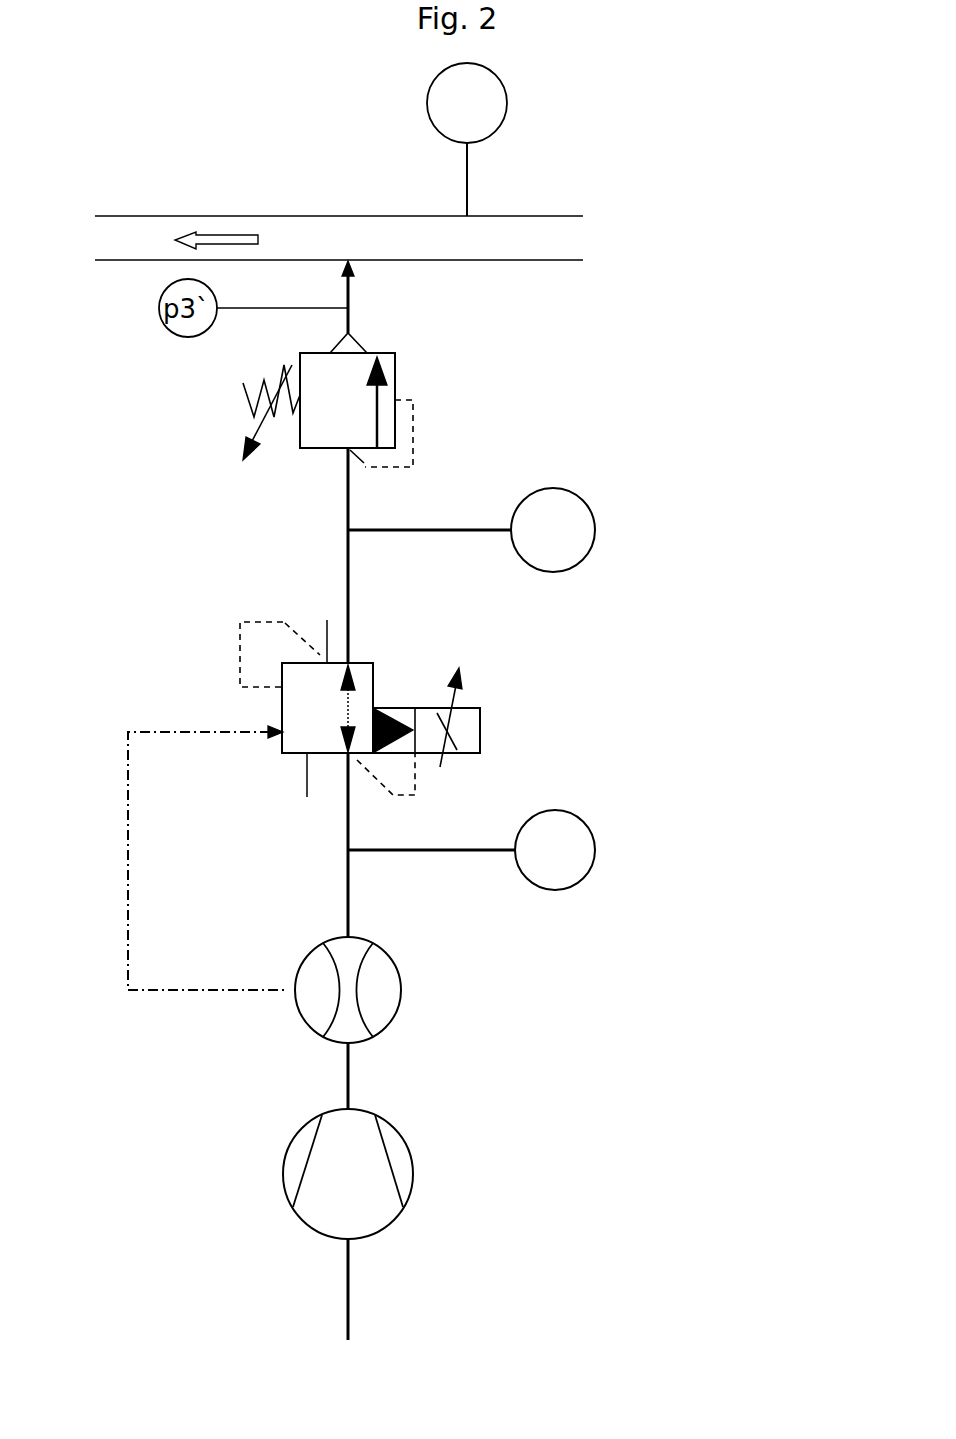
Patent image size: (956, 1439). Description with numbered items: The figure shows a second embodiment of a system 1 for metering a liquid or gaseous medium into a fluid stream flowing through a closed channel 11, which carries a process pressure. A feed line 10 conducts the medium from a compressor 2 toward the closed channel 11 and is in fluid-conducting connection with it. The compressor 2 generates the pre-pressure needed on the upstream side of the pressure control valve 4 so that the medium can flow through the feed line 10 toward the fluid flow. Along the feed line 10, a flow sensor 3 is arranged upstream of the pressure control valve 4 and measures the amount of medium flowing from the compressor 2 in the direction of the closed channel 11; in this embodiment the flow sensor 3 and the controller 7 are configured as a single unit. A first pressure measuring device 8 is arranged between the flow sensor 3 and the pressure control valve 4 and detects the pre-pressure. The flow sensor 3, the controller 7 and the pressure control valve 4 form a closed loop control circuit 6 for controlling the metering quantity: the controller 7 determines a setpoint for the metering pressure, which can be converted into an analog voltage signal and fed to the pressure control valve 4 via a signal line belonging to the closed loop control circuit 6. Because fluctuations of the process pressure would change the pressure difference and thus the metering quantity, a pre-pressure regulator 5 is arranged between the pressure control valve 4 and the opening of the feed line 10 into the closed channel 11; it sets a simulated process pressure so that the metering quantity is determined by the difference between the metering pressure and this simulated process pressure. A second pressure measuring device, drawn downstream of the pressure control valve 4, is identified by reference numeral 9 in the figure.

The system 1 is at (359, 191).
The compressor 2 is at (415, 1170).
The flow sensor 3 is at (426, 990).
The pressure control valve 4 is at (480, 728).
The pre-pressure regulator 5 is at (397, 377).
The closed loop control circuit 6 is at (120, 846).
The controller 7 is at (401, 985).
The first pressure measuring device 8 is at (596, 843).
The pressure sensor p2 9 is at (596, 525).
The feed line 10 is at (346, 503).
The closed channel 11 is at (534, 214).